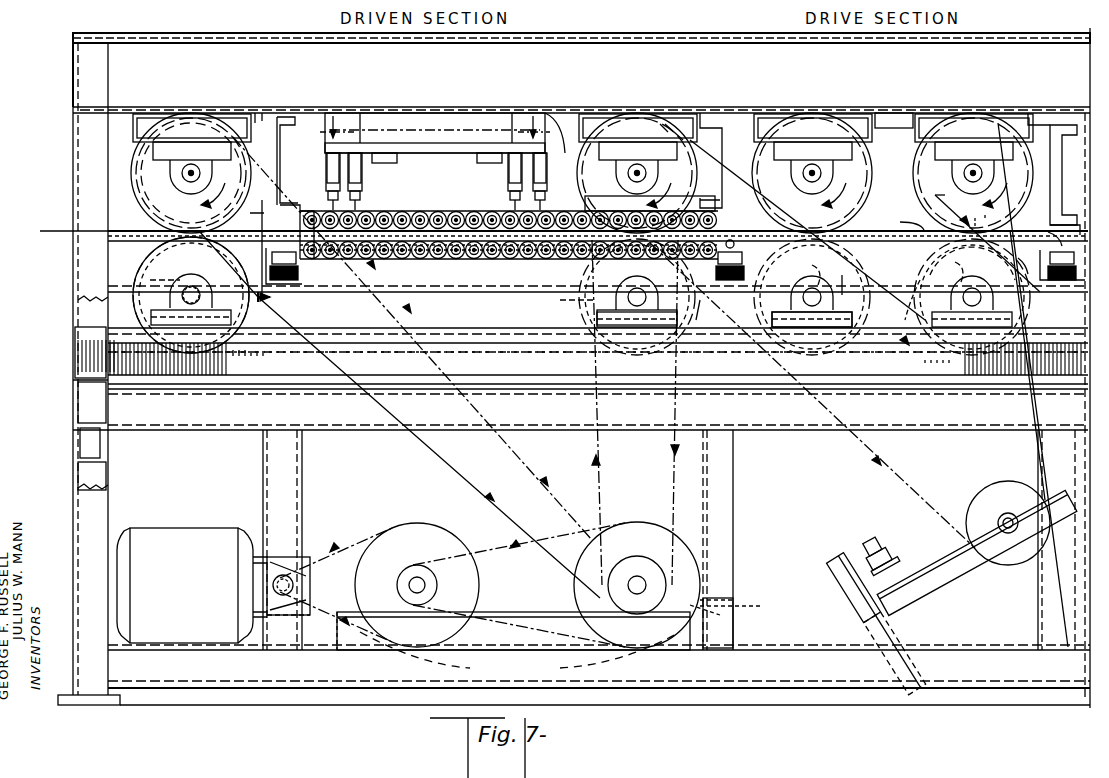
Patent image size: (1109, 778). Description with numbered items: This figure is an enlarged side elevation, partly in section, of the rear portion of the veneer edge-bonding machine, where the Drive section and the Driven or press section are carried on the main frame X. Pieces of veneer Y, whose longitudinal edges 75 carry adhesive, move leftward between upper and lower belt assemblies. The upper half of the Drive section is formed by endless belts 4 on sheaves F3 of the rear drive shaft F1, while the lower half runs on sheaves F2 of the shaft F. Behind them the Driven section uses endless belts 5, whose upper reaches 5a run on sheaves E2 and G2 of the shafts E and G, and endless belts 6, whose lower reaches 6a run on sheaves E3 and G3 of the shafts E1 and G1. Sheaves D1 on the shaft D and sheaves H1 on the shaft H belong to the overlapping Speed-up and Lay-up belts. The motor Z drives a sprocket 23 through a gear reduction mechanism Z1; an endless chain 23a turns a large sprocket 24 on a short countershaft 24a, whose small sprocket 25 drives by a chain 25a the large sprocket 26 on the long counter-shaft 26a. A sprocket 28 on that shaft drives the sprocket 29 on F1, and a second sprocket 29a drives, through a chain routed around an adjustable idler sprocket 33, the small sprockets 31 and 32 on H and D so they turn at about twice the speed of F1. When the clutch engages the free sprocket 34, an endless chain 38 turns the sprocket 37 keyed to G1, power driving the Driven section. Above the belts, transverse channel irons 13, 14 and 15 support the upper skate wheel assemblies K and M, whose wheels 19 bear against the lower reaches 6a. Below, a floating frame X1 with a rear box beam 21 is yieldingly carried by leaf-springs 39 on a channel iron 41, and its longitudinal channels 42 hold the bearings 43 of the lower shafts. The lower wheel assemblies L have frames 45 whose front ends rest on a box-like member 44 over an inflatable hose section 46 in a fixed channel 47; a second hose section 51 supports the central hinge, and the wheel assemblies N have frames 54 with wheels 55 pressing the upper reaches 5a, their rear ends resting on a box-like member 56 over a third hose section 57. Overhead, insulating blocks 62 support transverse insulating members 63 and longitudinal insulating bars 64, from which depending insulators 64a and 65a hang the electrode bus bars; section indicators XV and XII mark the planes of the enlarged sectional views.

The frame X is at (72, 73).
The floating frame X1 is at (66, 413).
The pieces of veneer Y is at (100, 231).
The motor Z is at (145, 555).
The gear reduction mechanism Z1 is at (282, 555).
The shaft G is at (194, 290).
The shaft G1 is at (191, 173).
The sheaves G2 is at (134, 263).
The sheaves G3 is at (130, 160).
The rear drive shaft F is at (634, 294).
The rear drive shaft F1 is at (637, 173).
The sheaves F2 is at (578, 282).
The sheaves F3 is at (599, 130).
The shaft E is at (810, 296).
The shaft E1 is at (812, 173).
The sheaves E2 is at (760, 312).
The sheaves E3 is at (749, 152).
The shaft D is at (973, 173).
The sheaves D1 is at (995, 136).
The shaft H is at (972, 300).
The sheaves H1 is at (886, 338).
The upper skate wheel assembly K is at (906, 218).
The lower wheel assemblies L is at (872, 250).
The upper wheel assemblies M is at (427, 210).
The wheel assembly frames N is at (474, 259).
The section line XV is at (333, 115).
The section line XII is at (340, 320).
The endless belts 4 is at (887, 125).
The endless belts 5 is at (533, 360).
The upper reaches 5a is at (768, 250).
The endless belts 6 is at (262, 112).
The lower reaches 6a is at (237, 234).
The channel iron 13 is at (1045, 183).
The channel iron 14 is at (716, 158).
The channel iron 15 is at (270, 155).
The wheels 19 is at (392, 210).
The box beam 21 is at (74, 413).
The sprocket 23 is at (302, 581).
The endless chain 23a is at (358, 540).
The large sprocket 24 is at (480, 602).
The short countershaft 24a is at (419, 582).
The small sprocket 25 is at (455, 583).
The endless sprocket chain 25a is at (520, 628).
The large sprocket 26 is at (575, 602).
The long counter-shaft 26a is at (638, 580).
The sprocket 28 is at (660, 449).
The sprocket 29 is at (680, 210).
The second sprocket 29a is at (674, 131).
The small sprocket 31 is at (925, 279).
The small sprocket 32 is at (972, 228).
The adjustable idler sprocket 33 is at (982, 490).
The sprocket 34 is at (745, 606).
The sprocket 37 is at (140, 191).
The endless chain 38 is at (506, 514).
The leaf-springs 39 is at (78, 441).
The channel iron 41 is at (74, 469).
The longitudinally extending channels 42 is at (74, 355).
The bearings 43 is at (148, 281).
The box-like member 44 is at (1047, 272).
The wheel assembly frames 45 is at (1042, 232).
The inflatable hose section 46 is at (1062, 270).
The transversely extending channel 47 is at (1018, 263).
The second hose section 51 is at (706, 314).
The frames 54 is at (488, 260).
The wheels 55 is at (396, 260).
The box-like member 56 is at (300, 267).
The third hose section 57 is at (300, 281).
The insulating blocks 62 is at (437, 130).
The transversely extending insulating members 63 is at (383, 152).
The longitudinally extending insulating bars 64 is at (550, 142).
The depending insulators 64a is at (326, 175).
The depending insulators 65a is at (362, 170).
The longitudinal edges 75 is at (900, 224).